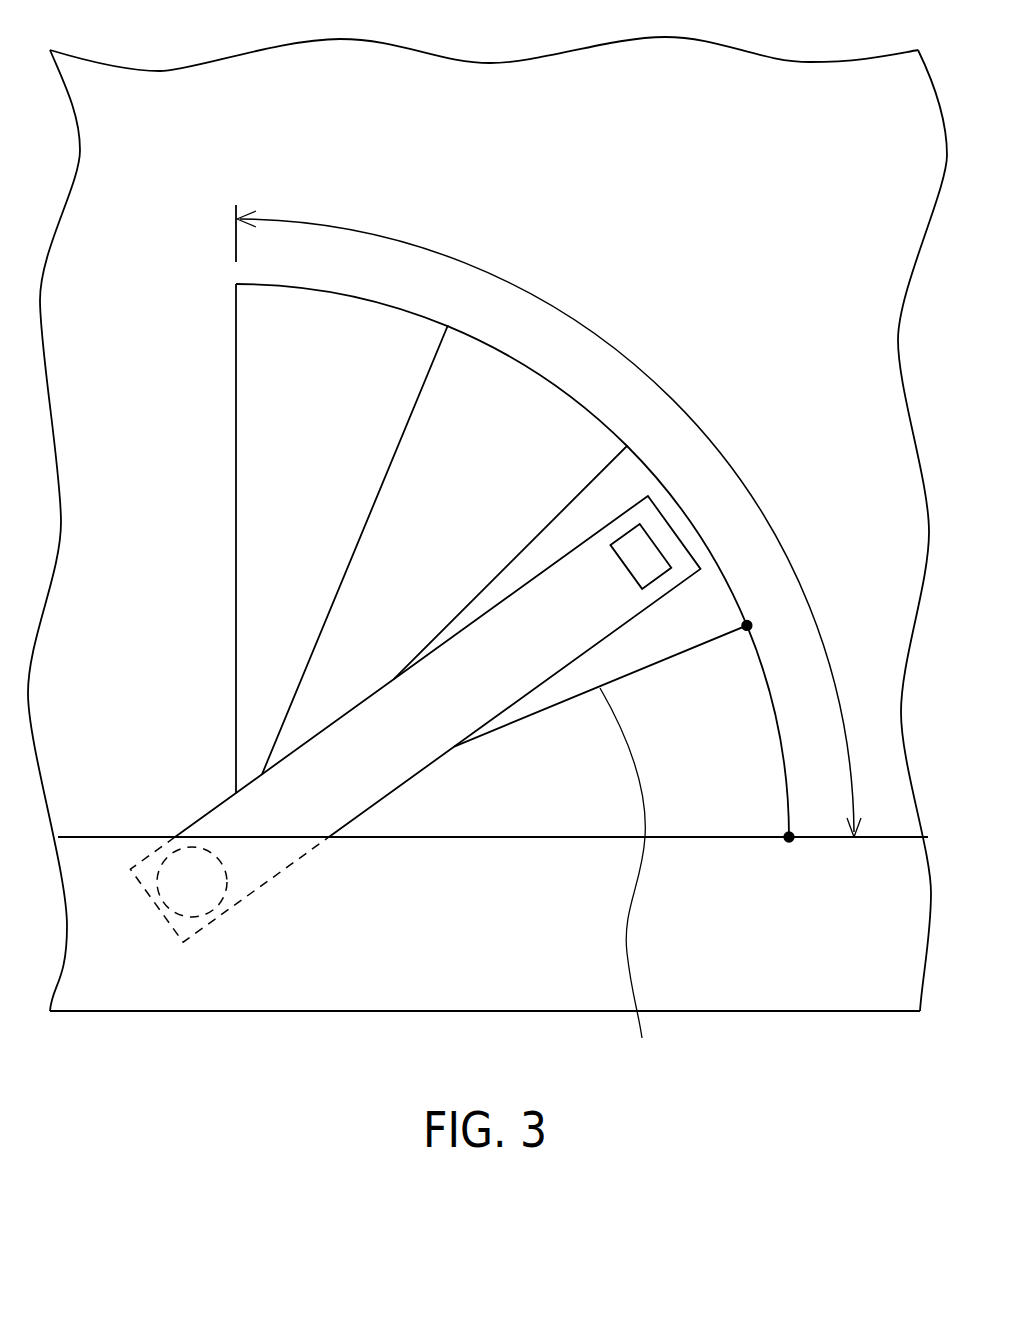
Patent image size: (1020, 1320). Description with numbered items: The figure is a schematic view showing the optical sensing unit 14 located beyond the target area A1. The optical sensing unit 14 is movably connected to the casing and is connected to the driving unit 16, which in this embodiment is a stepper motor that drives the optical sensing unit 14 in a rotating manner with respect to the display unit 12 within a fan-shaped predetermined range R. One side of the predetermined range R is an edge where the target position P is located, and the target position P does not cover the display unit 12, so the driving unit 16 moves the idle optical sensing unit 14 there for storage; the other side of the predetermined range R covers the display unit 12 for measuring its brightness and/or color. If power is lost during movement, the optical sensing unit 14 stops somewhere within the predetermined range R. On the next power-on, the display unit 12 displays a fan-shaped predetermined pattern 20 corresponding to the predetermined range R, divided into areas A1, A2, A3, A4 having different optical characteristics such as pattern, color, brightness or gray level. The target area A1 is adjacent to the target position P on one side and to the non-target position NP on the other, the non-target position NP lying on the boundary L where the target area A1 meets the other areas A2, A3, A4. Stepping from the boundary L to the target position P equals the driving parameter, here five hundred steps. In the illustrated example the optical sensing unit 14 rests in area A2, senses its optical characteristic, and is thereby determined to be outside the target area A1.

The display unit 12 is at (498, 88).
The optical sensing unit 14 is at (411, 732).
The driving unit 16 is at (192, 882).
The predetermined pattern 20 is at (478, 544).
The target area A1 is at (763, 737).
The area A2 is at (722, 597).
The area A3 is at (540, 403).
The area A4 is at (360, 322).
The predetermined range R is at (548, 521).
The non-target position NP is at (770, 628).
The target position P is at (787, 857).
The boundary L is at (625, 881).